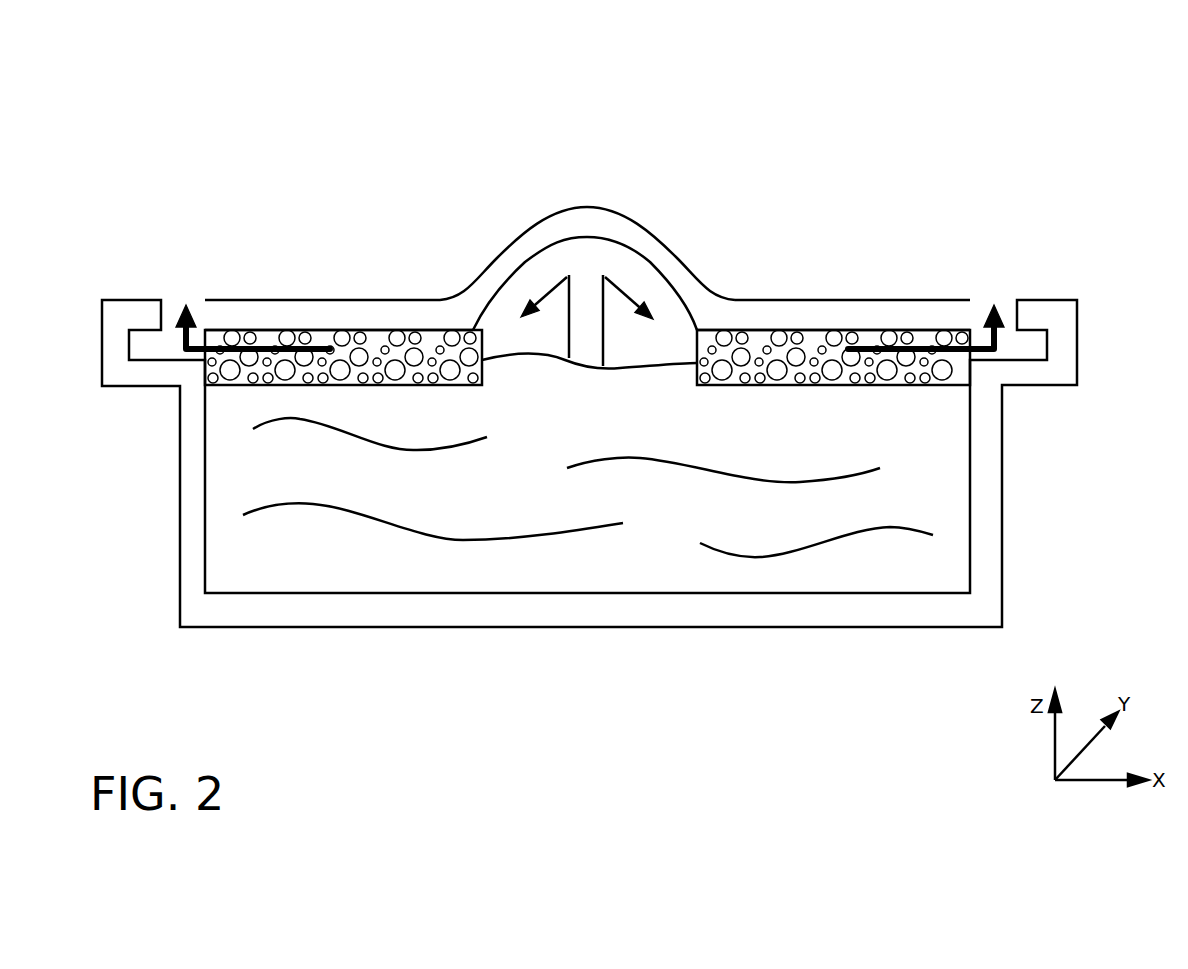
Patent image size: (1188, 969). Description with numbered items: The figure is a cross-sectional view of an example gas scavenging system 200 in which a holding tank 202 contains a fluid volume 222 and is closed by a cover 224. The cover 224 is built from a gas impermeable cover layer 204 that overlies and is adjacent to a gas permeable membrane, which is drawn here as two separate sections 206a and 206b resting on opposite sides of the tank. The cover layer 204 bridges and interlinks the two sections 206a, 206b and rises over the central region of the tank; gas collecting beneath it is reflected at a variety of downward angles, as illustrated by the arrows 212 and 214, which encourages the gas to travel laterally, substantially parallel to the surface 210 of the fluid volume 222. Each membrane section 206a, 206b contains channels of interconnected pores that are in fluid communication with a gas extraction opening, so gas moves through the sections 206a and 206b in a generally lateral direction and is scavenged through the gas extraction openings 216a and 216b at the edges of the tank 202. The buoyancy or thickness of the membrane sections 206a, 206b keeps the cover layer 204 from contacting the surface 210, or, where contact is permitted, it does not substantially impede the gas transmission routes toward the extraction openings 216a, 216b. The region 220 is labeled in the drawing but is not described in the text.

The gas scavenging system 200 is at (1042, 92).
The holding tank 202 is at (177, 538).
The gas impermeable cover layer 204 is at (287, 300).
The section of gas permeable membrane 206a is at (410, 353).
The section of gas permeable membrane 206b is at (796, 350).
The surface of the fluid volume 210 is at (623, 370).
The arrow indicating reflected gas angle 212 is at (556, 287).
The arrow indicating reflected gas angle 214 is at (618, 287).
The gas extraction opening 216a is at (178, 283).
The gas extraction opening 216b is at (999, 286).
The vapor cavity 220 is at (678, 345).
The fluid volume 222 is at (933, 457).
The cover 224 is at (426, 268).